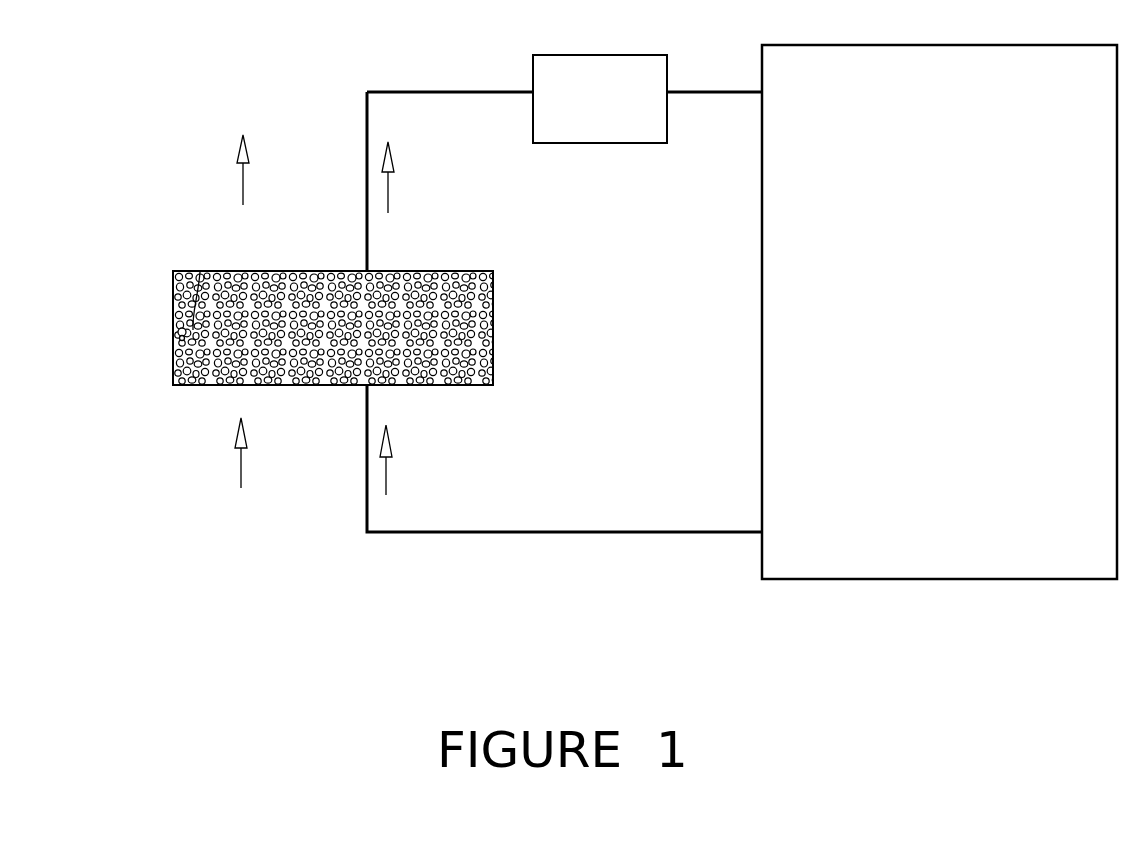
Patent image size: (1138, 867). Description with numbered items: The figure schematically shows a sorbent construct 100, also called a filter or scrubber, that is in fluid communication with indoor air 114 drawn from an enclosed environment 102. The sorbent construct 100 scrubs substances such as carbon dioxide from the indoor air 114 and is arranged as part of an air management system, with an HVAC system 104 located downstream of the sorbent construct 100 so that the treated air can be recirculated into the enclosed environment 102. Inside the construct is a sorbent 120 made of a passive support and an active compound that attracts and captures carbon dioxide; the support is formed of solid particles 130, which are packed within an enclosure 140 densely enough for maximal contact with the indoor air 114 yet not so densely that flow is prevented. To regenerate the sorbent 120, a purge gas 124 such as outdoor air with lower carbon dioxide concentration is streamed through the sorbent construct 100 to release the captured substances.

The sorbent construct 100 is at (274, 283).
The enclosed environment 102 is at (942, 579).
The HVAC system 104 is at (585, 143).
The indoor air 114 is at (388, 192).
The sorbent 120 is at (291, 280).
The purge gas 124 is at (243, 180).
The particles 130 is at (180, 338).
The enclosure 140 is at (200, 270).